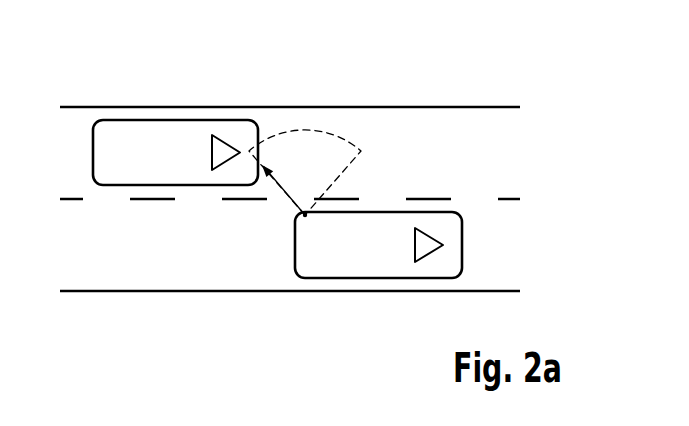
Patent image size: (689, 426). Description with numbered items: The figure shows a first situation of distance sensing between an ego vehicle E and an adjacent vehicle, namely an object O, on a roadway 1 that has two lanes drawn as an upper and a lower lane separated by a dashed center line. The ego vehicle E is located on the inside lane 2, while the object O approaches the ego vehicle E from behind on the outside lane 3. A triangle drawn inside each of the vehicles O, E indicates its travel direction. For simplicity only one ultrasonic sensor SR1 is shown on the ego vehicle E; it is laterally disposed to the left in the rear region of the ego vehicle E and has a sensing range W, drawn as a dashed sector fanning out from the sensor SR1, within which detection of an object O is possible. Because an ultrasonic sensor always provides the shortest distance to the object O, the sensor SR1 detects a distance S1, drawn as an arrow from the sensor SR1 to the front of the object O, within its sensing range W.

The roadway 1 is at (417, 74).
The inside lane 2 is at (500, 243).
The outside lane 3 is at (500, 150).
The object O is at (172, 120).
The ego vehicle E is at (385, 279).
The sensing range W is at (306, 128).
The distance S1 is at (283, 196).
The ultrasonic sensor SR1 is at (307, 218).